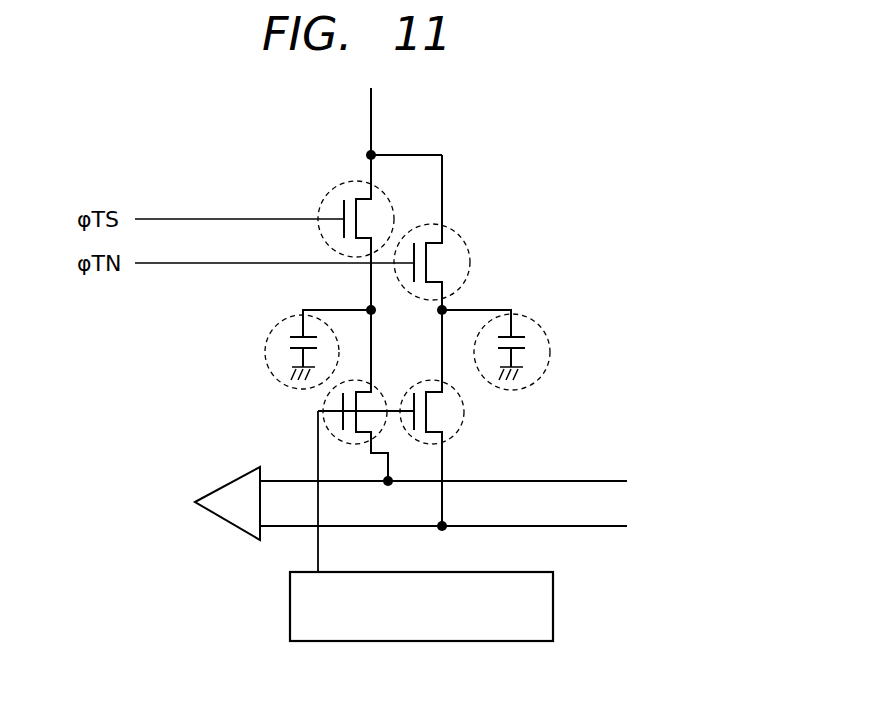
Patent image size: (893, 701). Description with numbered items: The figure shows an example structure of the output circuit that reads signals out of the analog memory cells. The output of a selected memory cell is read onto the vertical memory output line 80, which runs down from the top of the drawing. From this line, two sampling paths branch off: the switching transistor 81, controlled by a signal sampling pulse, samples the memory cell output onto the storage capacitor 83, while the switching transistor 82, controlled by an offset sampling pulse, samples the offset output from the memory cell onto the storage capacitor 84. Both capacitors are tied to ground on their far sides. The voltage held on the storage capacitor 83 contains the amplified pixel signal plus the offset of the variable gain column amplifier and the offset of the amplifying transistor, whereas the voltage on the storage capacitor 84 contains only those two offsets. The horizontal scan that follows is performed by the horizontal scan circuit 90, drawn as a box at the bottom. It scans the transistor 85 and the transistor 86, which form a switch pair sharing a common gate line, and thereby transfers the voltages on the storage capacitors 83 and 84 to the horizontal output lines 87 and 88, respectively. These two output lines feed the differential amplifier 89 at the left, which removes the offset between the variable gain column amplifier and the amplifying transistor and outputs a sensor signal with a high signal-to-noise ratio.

The vertical memory output line 80 is at (373, 113).
The switching transistor 81 is at (322, 206).
The switching transistor 82 is at (459, 236).
The storage capacitor 83 is at (274, 331).
The storage capacitor 84 is at (540, 325).
The transistor 85 is at (325, 400).
The transistor 86 is at (464, 412).
The horizontal output line 87 is at (584, 480).
The horizontal output line 88 is at (584, 527).
The differential amplifier 89 is at (220, 518).
The horizontal scan circuit 90 is at (554, 605).